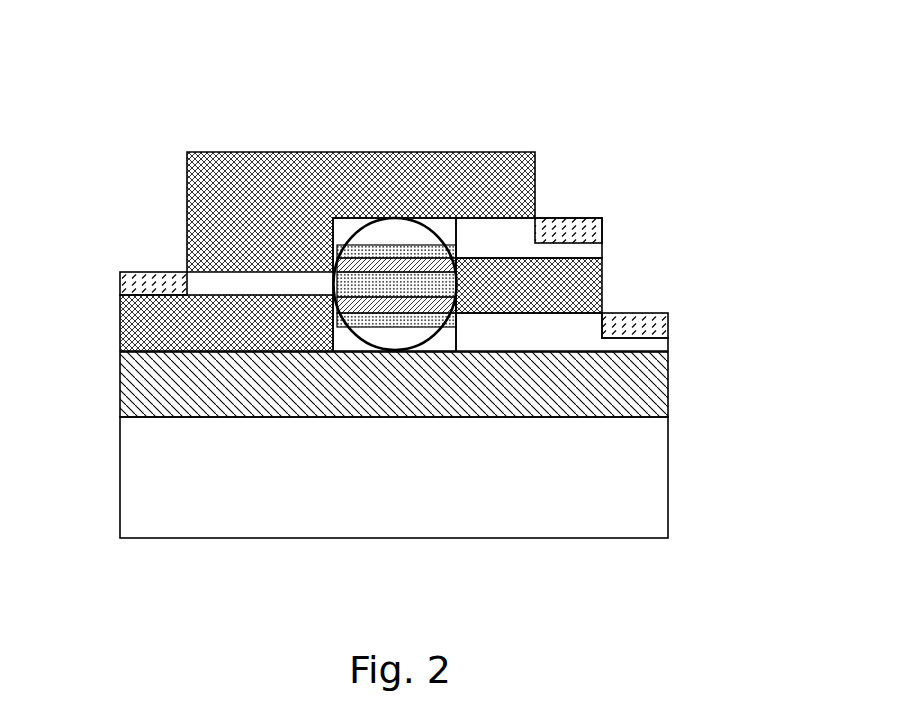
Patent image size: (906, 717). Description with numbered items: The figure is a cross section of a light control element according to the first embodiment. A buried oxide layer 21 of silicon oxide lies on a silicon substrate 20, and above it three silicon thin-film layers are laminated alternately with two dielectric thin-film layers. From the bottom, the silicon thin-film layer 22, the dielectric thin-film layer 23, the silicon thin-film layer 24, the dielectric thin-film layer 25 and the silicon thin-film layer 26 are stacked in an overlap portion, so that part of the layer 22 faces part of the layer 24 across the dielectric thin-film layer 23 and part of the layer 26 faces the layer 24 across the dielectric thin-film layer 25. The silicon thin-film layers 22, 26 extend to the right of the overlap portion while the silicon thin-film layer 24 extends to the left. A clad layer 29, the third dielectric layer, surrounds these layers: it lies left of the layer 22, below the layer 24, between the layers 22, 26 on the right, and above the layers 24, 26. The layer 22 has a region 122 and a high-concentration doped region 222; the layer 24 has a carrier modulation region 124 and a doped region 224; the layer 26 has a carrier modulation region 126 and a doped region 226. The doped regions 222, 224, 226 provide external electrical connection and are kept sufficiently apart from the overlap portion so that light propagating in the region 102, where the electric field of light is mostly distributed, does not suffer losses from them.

The silicon substrate 20 is at (662, 473).
The buried oxide layer 21 is at (670, 396).
The silicon thin-film layer 22 is at (603, 305).
The dielectric thin-film layer 23 is at (382, 283).
The silicon thin-film layer 24 is at (237, 276).
The dielectric thin-film layer 25 is at (407, 243).
The silicon thin-film layer 26 is at (507, 227).
The clad layer 29 is at (508, 152).
The region 102 is at (370, 325).
The region 122 is at (430, 327).
The region 124 is at (377, 262).
The region 126 is at (427, 322).
The region 222 is at (671, 323).
The region 224 is at (143, 283).
The region 226 is at (605, 226).